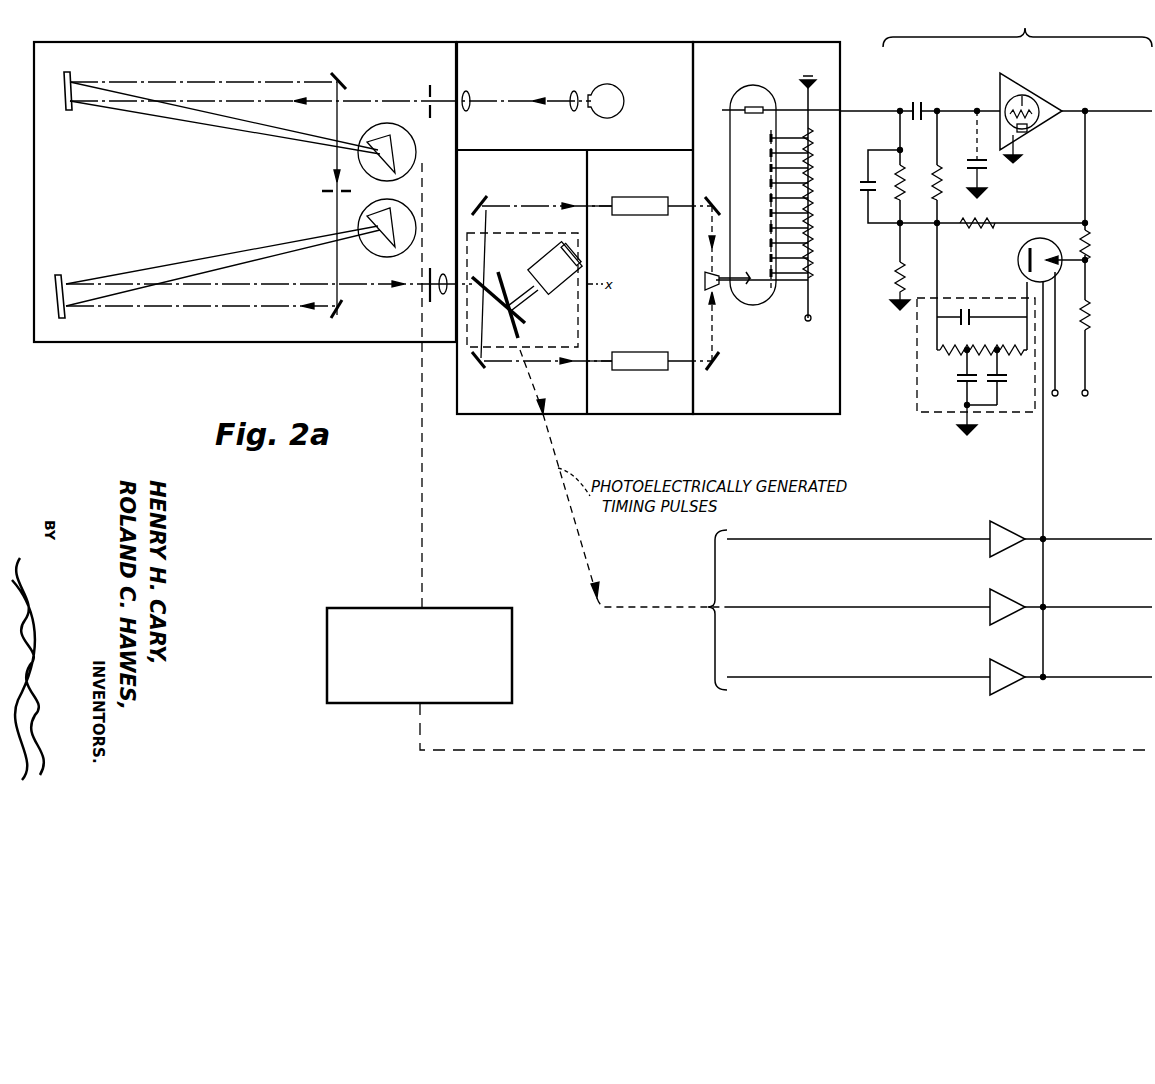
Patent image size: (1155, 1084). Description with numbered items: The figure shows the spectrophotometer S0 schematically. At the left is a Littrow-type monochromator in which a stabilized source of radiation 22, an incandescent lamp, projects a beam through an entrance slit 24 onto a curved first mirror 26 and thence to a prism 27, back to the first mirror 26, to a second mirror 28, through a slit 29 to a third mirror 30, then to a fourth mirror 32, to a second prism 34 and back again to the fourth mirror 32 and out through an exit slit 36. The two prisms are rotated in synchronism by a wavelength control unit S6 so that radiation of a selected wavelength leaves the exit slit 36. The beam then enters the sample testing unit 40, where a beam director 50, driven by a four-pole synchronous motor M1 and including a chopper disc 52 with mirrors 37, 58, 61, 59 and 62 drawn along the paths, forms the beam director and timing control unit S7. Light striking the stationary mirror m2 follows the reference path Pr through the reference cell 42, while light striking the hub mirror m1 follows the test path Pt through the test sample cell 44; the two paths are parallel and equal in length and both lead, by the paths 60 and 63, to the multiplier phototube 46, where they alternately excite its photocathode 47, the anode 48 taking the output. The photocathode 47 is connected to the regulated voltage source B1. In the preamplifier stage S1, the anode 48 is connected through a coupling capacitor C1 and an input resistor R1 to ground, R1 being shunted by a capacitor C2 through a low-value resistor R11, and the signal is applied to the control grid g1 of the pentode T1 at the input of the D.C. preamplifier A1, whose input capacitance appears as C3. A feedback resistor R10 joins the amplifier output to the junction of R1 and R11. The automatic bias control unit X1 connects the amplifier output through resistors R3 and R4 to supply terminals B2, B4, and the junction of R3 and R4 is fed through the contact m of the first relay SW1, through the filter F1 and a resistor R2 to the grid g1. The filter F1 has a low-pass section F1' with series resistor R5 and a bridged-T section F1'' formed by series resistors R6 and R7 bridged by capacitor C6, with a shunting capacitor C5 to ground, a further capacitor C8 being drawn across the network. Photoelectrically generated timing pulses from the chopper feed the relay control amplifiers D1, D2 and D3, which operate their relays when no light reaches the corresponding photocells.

The spectrophotometer S0 is at (382, 42).
The curved first mirror 26 is at (70, 73).
The slit 29 is at (328, 190).
The second mirror 28 is at (343, 80).
The entrance slit 24 is at (426, 86).
The prism 27 is at (398, 150).
The second prism 34 is at (378, 252).
The fourth mirror 32 is at (66, 278).
The third mirror 30 is at (336, 320).
The exit slit 36 is at (428, 292).
The stabilized source of radiation 22 is at (624, 98).
The beam splitting mirror 58 is at (486, 208).
The sample testing unit 40 is at (547, 193).
The reference cell 42 is at (666, 198).
The reference beam path Pr is at (604, 208).
The test sample cell 44 is at (660, 354).
The sample beam path Pt is at (604, 361).
The mirror 61 is at (480, 368).
The beam director and timing control unit S7 is at (578, 246).
The four-pole synchronous motor M1 is at (555, 290).
The hub mirror m1 is at (488, 274).
The stationary mirror m2 is at (520, 266).
The beam director 50 is at (490, 302).
The chopper disc 52 is at (499, 337).
The chopper disc 37 is at (554, 337).
The multiplier phototube 46 is at (744, 90).
The anode 48 is at (771, 110).
The photocathode 47 is at (758, 306).
The adjustable regulated source of voltage B1 is at (818, 325).
The photocathode 60 is at (728, 276).
The light path to photocathode 63 is at (718, 290).
The mirror 59 is at (709, 195).
The mirror 62 is at (710, 370).
The preamplifier stage S1 is at (1017, 27).
The coupling capacitor C1 is at (921, 108).
The input resistor R1 is at (906, 174).
The resistor R11 is at (889, 286).
The capacitor C2 is at (862, 183).
The resistor R2 is at (942, 192).
The input capacitor C3 is at (986, 154).
The feedback resistor R10 is at (991, 216).
The D.C. preamplifier A1 is at (1056, 102).
The pentode T1 is at (1000, 100).
The control grid g1 is at (1024, 98).
The resistor R3 is at (1095, 246).
The resistor R4 is at (1095, 315).
The first relay SW1 is at (1018, 264).
The switch contact m is at (1051, 329).
The battery terminal B2 is at (1065, 400).
The battery terminal B4 is at (1095, 400).
The automatic bias control unit X1 is at (976, 342).
The capacitor C8 is at (982, 313).
The series resistor R7 is at (953, 343).
The series resistor R6 is at (985, 343).
The series resistor R5 is at (1013, 343).
The shunting capacitor C5 is at (969, 392).
The bridging capacitor C6 is at (1006, 377).
The second filter section F1'' is at (897, 415).
The filter F1 is at (918, 435).
The first filter section F1' is at (997, 424).
The relay control amplifier D3 is at (939, 535).
The relay control amplifier D2 is at (939, 603).
The relay control amplifier D1 is at (939, 673).
The wavelength control unit S6 is at (502, 608).